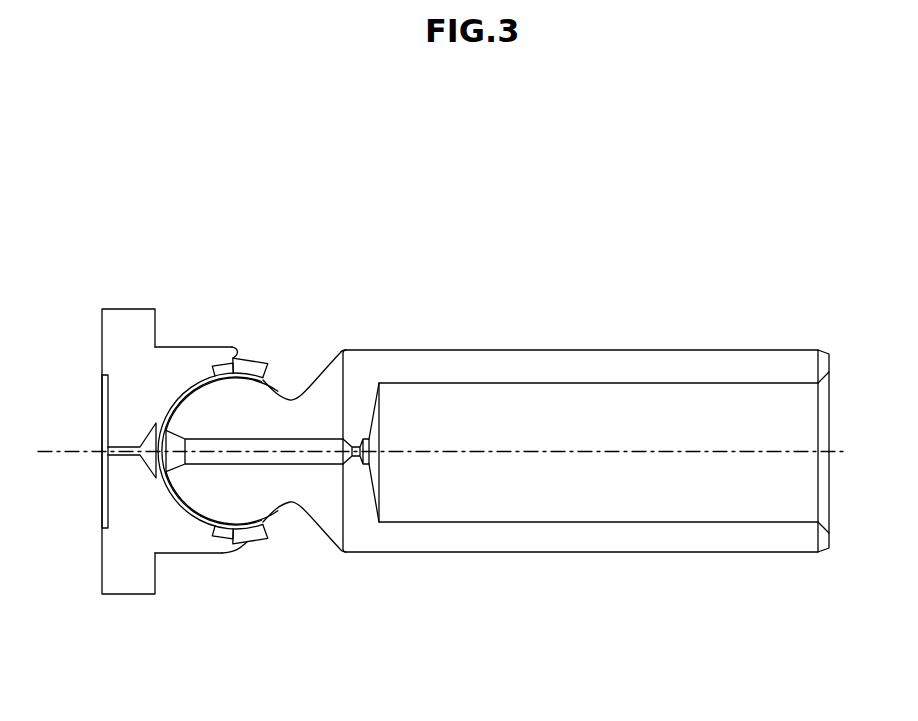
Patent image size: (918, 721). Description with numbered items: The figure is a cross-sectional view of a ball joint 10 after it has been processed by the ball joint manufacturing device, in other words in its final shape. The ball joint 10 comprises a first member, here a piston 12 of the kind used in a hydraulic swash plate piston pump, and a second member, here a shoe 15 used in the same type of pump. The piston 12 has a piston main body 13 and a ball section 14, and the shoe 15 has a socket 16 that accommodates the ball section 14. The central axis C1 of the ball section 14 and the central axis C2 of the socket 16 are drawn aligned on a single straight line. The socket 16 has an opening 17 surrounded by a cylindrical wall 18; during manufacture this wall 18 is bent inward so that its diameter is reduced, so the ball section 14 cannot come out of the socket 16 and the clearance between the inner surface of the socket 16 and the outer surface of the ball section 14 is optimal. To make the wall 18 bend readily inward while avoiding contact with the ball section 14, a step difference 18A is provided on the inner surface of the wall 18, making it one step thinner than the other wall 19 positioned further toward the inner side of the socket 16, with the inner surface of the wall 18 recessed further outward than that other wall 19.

The ball joint 10 is at (159, 128).
The piston 12 is at (600, 351).
The piston main body 13 is at (500, 553).
The ball section 14 is at (250, 540).
The shoe 15 is at (132, 304).
The socket 16 is at (177, 556).
The opening of socket 17 is at (270, 382).
The wall surrounding opening of socket 18 is at (255, 362).
The step difference 18A is at (226, 364).
The other wall 19 is at (183, 363).
The central axis of ball section C1 is at (455, 453).
The central axis of socket C2 is at (60, 452).